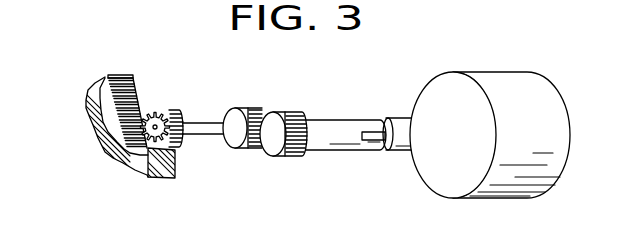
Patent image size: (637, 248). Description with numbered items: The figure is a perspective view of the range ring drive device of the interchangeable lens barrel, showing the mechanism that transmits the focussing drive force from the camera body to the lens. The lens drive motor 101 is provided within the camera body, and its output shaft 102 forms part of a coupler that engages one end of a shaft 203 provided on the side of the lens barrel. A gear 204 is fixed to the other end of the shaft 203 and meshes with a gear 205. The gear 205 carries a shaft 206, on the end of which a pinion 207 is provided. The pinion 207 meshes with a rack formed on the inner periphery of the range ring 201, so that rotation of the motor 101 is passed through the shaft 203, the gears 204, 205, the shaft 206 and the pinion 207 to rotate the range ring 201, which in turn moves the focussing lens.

The lens drive motor 101 is at (496, 77).
The output shaft 102 is at (437, 127).
The range ring 201 is at (100, 121).
The shaft 203 is at (328, 125).
The gear 204 is at (299, 145).
The gear 205 is at (252, 110).
The shaft 206 is at (206, 135).
The pinion 207 is at (157, 113).